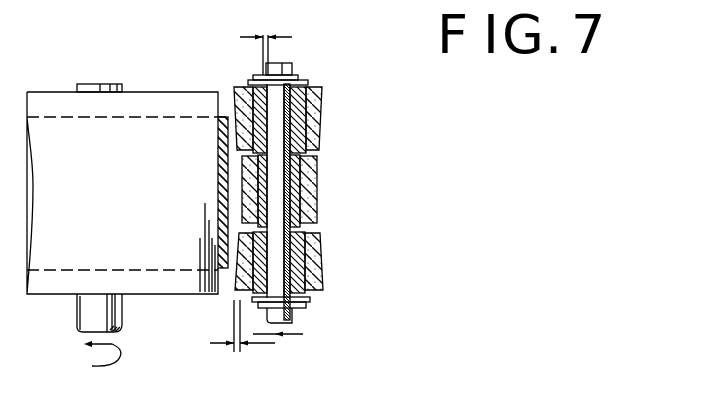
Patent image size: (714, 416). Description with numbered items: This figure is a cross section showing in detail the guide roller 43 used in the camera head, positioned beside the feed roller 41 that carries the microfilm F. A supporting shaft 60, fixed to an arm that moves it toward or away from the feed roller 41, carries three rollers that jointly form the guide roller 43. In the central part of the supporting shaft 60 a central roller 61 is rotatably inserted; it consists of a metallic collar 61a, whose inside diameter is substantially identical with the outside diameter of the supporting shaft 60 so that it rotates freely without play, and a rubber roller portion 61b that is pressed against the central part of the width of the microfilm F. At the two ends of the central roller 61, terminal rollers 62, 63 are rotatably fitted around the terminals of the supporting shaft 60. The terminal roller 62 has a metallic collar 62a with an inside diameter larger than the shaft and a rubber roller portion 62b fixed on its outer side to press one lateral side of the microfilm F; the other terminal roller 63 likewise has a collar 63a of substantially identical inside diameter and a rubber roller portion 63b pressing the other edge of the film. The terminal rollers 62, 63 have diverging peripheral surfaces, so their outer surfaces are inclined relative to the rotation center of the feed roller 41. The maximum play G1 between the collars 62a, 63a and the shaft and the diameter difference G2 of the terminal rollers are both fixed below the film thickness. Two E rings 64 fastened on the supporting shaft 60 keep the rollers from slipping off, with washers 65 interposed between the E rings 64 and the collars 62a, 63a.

The feed roller 41 is at (50, 288).
The guide roller 43 is at (315, 60).
The supporting shaft 60 is at (275, 323).
The central roller 61 is at (333, 199).
The metallic collar 61a is at (317, 172).
The rubber roller portion 61b is at (317, 217).
The terminal roller 62 is at (329, 99).
The metallic collar 62a is at (308, 88).
The rubber roller portion 62b is at (318, 127).
The terminal roller 63 is at (329, 275).
The collar 63a is at (318, 258).
The rubber roller portion 63b is at (308, 298).
The E ring 64 is at (259, 82).
The washer 65 is at (253, 78).
The microfilm F is at (218, 185).
The play G1 is at (269, 21).
The difference between maximum and minimum diameters G2 is at (256, 338).